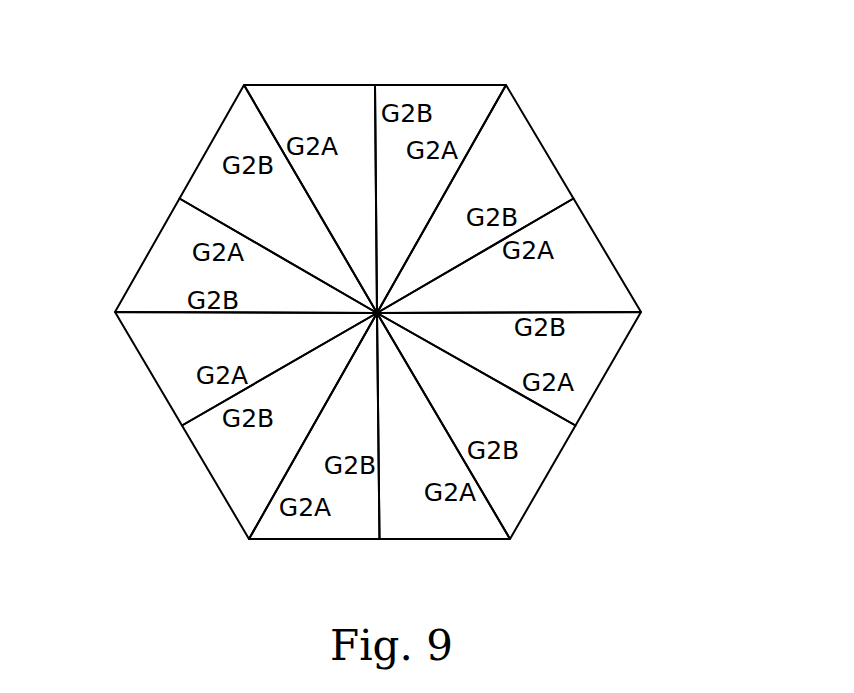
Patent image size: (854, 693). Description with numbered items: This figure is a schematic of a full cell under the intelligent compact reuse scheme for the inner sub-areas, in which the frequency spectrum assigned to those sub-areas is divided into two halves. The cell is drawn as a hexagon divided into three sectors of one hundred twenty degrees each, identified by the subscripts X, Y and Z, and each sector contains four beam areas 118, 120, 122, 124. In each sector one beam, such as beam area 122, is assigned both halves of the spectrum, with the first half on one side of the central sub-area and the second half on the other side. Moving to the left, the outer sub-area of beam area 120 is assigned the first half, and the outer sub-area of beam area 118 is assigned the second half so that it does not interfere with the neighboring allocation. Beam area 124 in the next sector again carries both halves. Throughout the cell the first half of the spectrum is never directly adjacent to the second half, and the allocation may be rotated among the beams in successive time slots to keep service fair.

The beam area 118 is at (633, 257).
The beam area 120 is at (622, 380).
The beam area 122 is at (442, 97).
The beam area 124 is at (526, 140).